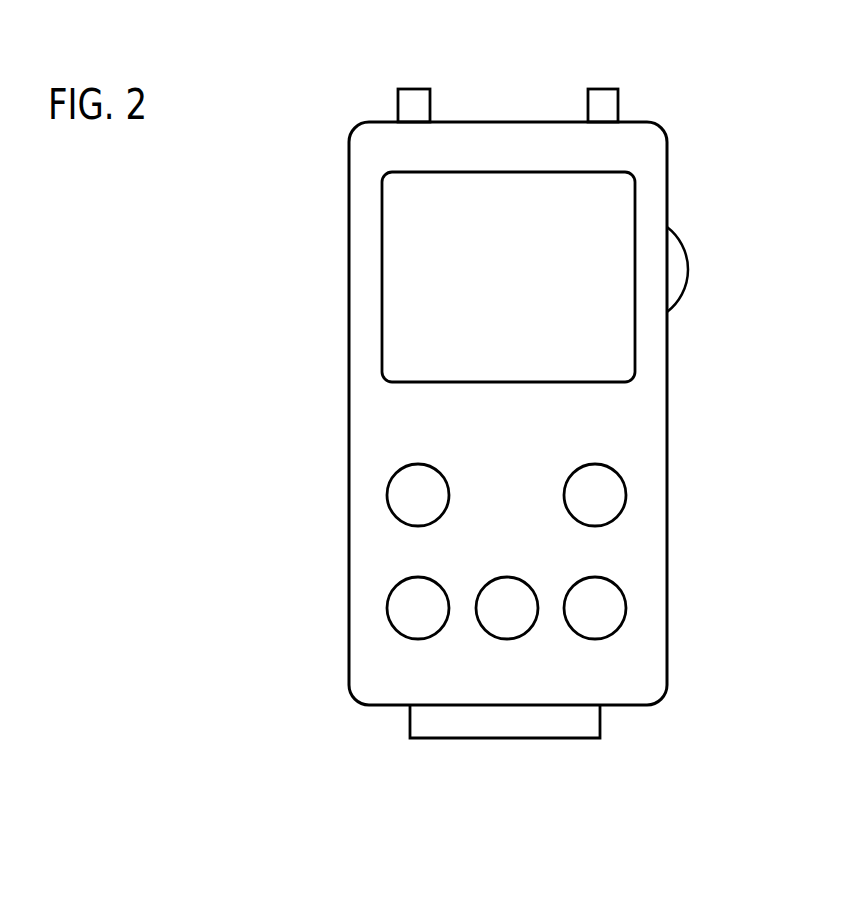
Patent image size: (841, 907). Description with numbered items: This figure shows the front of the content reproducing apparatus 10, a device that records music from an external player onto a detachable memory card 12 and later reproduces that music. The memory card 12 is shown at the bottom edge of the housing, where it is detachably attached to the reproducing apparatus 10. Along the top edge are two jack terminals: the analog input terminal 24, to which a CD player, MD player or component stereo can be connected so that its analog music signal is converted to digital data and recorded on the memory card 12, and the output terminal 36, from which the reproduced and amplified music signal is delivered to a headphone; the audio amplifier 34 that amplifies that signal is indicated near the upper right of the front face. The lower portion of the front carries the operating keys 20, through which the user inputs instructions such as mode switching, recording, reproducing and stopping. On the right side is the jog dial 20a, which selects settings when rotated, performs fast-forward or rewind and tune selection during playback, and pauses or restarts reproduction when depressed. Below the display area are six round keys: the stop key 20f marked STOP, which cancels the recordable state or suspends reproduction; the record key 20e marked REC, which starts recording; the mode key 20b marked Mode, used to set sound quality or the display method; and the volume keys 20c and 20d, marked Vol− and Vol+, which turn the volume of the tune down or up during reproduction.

The reproducing apparatus 10 is at (523, 20).
The memory card 12 is at (537, 725).
The analog input terminal 24 is at (430, 98).
The output terminal 36 is at (618, 98).
The audio amplifier 34 is at (616, 220).
The operating keys 20 is at (632, 473).
The jog dial 20a is at (678, 267).
The mode key 20b is at (387, 608).
The volume key 20c is at (481, 582).
The volume key 20d is at (626, 606).
The record key 20e is at (626, 494).
The stop key 20f is at (387, 497).